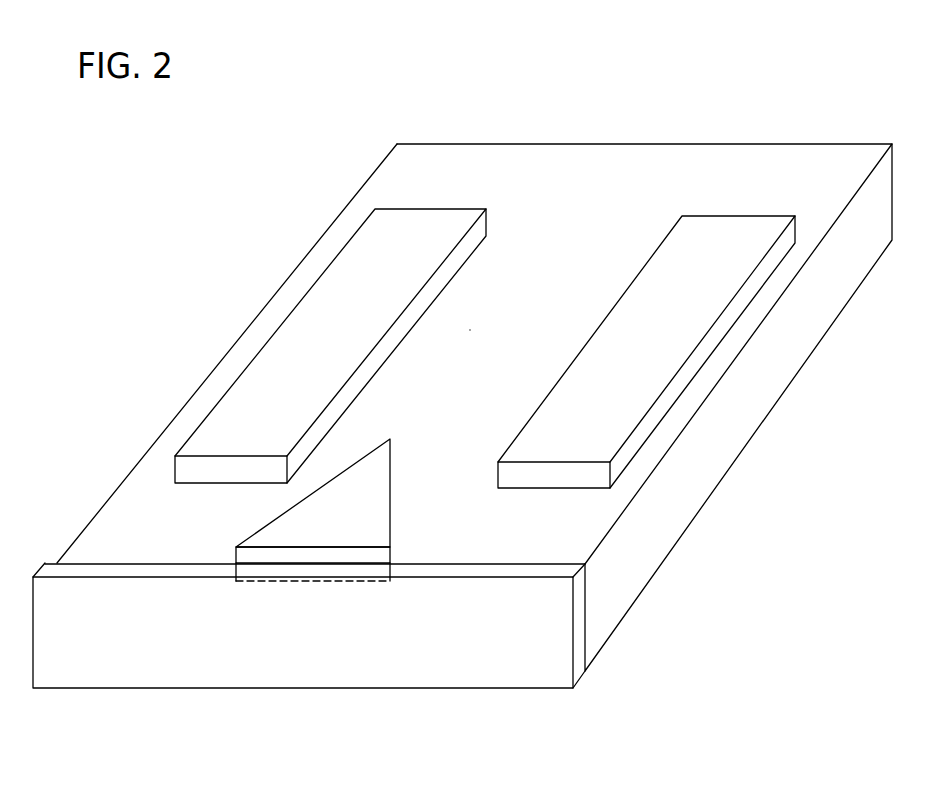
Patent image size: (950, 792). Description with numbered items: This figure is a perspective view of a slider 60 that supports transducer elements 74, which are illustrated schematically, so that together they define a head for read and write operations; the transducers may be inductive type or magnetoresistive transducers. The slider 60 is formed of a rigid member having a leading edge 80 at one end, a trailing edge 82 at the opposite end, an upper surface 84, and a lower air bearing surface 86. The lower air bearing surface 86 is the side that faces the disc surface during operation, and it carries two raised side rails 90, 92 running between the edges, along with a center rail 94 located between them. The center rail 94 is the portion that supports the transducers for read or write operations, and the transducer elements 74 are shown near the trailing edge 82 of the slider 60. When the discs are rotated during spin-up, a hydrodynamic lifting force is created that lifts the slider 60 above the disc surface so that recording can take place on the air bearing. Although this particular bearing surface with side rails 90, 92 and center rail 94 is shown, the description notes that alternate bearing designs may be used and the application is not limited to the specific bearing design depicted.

The slider 60 is at (830, 133).
The transducer elements 74 is at (320, 554).
The leading edge 80 is at (682, 143).
The trailing edge 82 is at (547, 572).
The upper surface 84 is at (717, 487).
The lower air bearing surface 86 is at (512, 353).
The raised side rail 90 is at (618, 356).
The raised side rail 92 is at (313, 344).
The center rail 94 is at (347, 500).